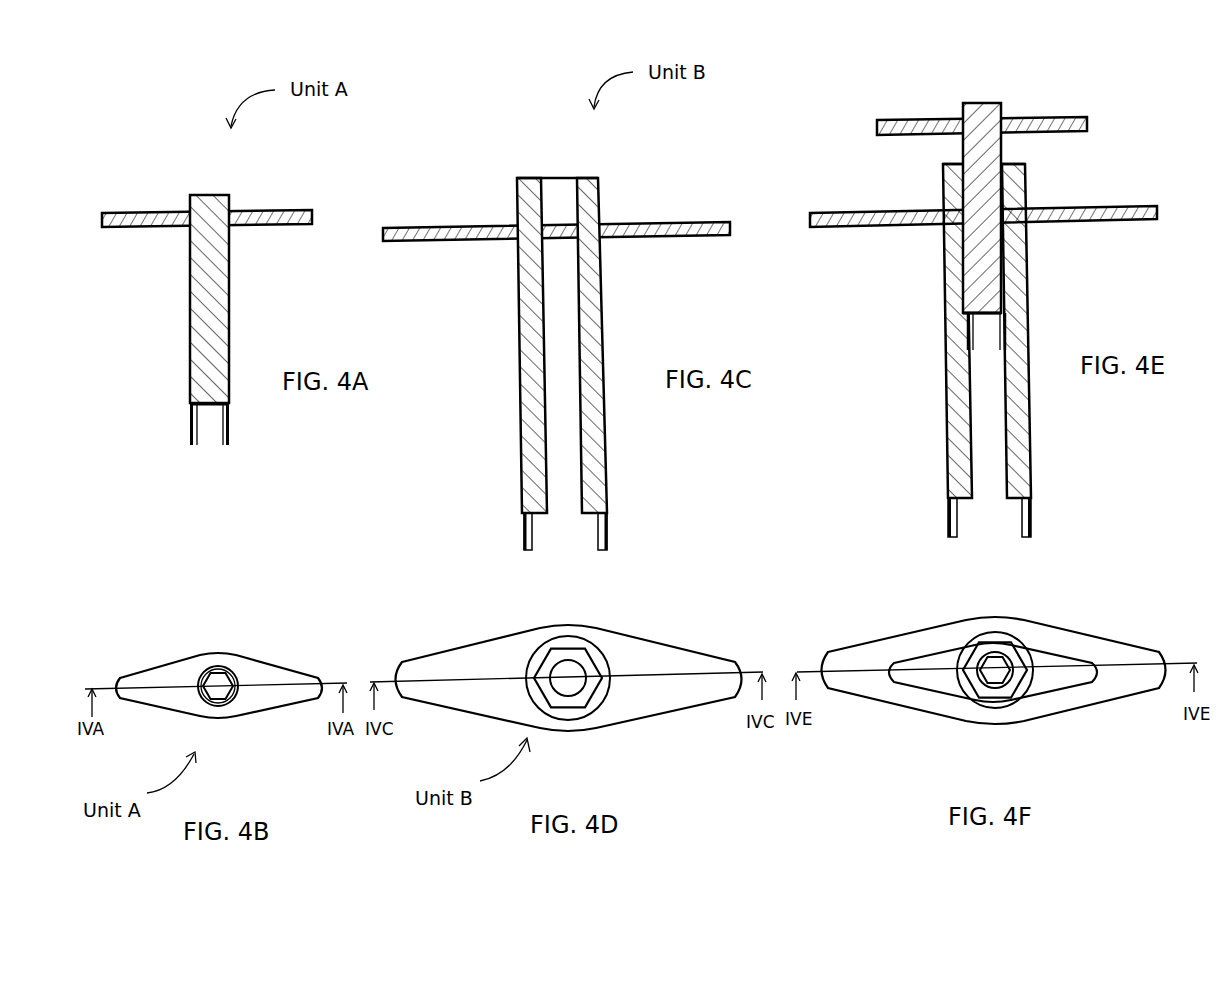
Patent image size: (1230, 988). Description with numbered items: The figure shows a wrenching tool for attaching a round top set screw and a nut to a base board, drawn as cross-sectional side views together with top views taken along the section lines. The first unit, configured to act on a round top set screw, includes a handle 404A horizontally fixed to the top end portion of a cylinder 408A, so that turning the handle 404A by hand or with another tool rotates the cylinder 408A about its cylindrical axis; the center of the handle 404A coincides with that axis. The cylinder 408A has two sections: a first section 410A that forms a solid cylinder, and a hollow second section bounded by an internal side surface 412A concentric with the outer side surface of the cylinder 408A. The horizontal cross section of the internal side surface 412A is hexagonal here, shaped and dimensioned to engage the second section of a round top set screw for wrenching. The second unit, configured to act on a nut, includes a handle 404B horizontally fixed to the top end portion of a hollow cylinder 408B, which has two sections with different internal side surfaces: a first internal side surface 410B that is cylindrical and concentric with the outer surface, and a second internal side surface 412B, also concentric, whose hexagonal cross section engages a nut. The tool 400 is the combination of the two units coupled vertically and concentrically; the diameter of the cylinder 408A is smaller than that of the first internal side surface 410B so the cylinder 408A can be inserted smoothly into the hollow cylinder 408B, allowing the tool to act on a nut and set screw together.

In FIG. 4E, the tool 400 is at (1015, 66).
In FIG. 4F, the tool 400 is at (941, 733).
In FIG. 4A, the handle 404A is at (152, 211).
In FIG. 4A, the cylinder 408A is at (206, 194).
In FIG. 4A, the first section 410A is at (213, 265).
In FIG. 4A, the internal side surface 412A is at (198, 437).
In FIG. 4C, the handle 404B is at (458, 223).
In FIG. 4C, the hollow cylinder 408B is at (530, 178).
In FIG. 4C, the first internal side surface 410B is at (580, 303).
In FIG. 4C, the second internal side surface 412B is at (597, 523).